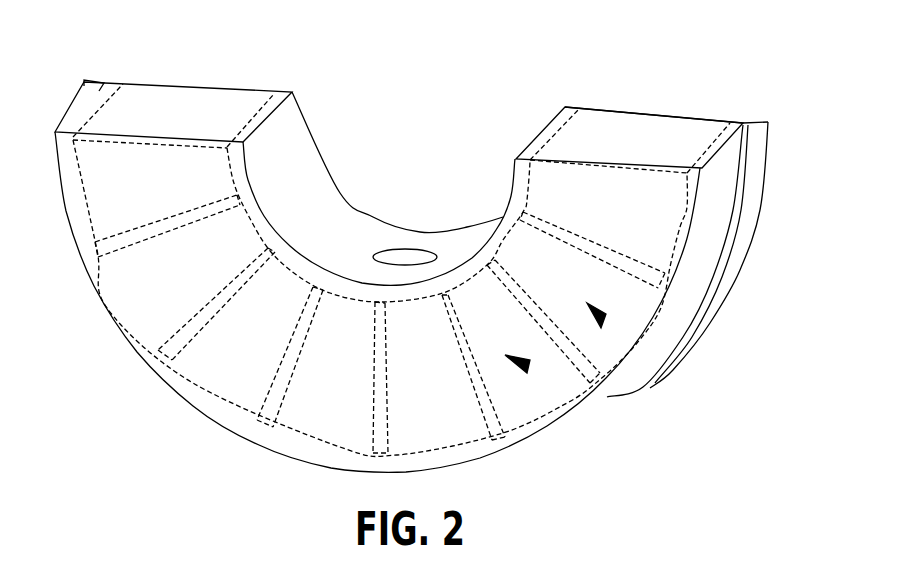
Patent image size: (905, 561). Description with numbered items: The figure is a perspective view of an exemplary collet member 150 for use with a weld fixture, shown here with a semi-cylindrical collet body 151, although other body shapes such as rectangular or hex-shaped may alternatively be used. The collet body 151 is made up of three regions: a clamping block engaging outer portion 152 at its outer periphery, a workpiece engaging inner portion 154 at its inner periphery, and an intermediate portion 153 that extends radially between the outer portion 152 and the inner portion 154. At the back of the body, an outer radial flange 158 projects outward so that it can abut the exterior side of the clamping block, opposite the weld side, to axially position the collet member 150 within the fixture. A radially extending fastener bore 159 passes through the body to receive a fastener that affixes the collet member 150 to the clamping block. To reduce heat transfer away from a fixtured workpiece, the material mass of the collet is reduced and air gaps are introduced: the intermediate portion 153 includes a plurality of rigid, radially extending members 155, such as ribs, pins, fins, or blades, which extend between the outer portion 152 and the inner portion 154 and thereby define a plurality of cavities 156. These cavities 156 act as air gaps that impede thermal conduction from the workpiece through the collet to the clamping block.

The collet member 150 is at (450, 264).
The collet body 151 is at (427, 264).
The clamping block engaging outer portion 152 is at (458, 458).
The intermediate portion 153 is at (650, 173).
The workpiece engaging inner portion 154 is at (487, 253).
The radially extending members 155 is at (372, 388).
The cavities 156 is at (537, 367).
The outer radial flange 158 is at (763, 162).
The fastener bore 159 is at (392, 262).